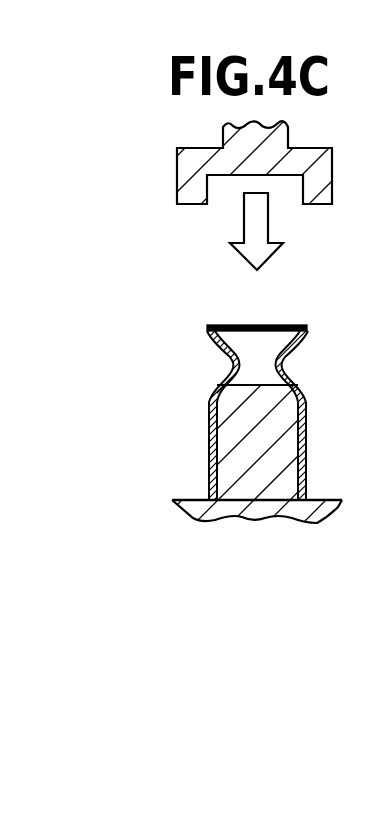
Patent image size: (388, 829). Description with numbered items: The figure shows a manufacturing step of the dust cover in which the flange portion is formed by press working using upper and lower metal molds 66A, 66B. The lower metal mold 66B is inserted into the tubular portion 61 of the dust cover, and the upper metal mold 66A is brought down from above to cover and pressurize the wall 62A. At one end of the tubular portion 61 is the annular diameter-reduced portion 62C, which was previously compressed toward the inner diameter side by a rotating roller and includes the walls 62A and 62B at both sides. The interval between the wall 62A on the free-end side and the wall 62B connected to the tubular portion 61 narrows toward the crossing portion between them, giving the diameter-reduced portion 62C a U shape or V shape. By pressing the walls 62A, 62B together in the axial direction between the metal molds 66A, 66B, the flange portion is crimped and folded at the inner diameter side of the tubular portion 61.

The upper metal mold 66A is at (190, 178).
The lower metal mold 66B is at (262, 428).
The tubular portion 61 is at (207, 455).
The wall 62A is at (208, 333).
The wall 62B is at (220, 378).
The diameter-reduced portion 62C is at (226, 364).